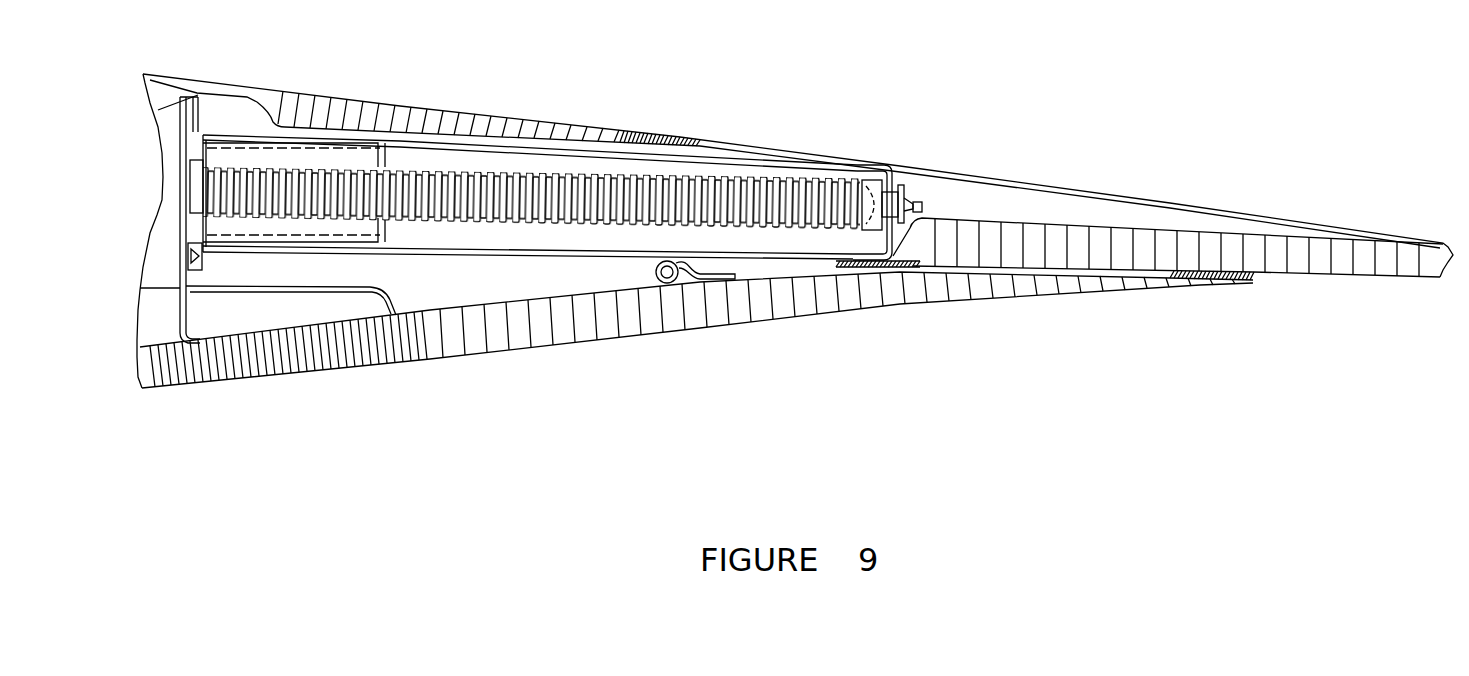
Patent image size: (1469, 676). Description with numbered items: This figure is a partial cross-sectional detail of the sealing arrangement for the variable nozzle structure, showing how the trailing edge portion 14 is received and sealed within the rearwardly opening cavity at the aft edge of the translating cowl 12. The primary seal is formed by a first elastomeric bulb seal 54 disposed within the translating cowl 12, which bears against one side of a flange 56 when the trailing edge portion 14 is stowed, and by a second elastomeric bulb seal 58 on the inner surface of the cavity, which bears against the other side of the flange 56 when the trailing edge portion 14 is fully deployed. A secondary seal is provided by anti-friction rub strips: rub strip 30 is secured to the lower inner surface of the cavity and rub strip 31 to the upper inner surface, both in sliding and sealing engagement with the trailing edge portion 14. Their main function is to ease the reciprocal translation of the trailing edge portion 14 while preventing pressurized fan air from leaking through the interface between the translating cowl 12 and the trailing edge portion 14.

The translating cowl 12 is at (497, 357).
The trailing edge portion 14 is at (1172, 202).
The rub strip 30 is at (1254, 278).
The rub strip 31 is at (670, 134).
The elastomeric bulb seal 54 is at (180, 253).
The flange 56 is at (198, 262).
The elastomeric bulb seal 58 is at (665, 285).